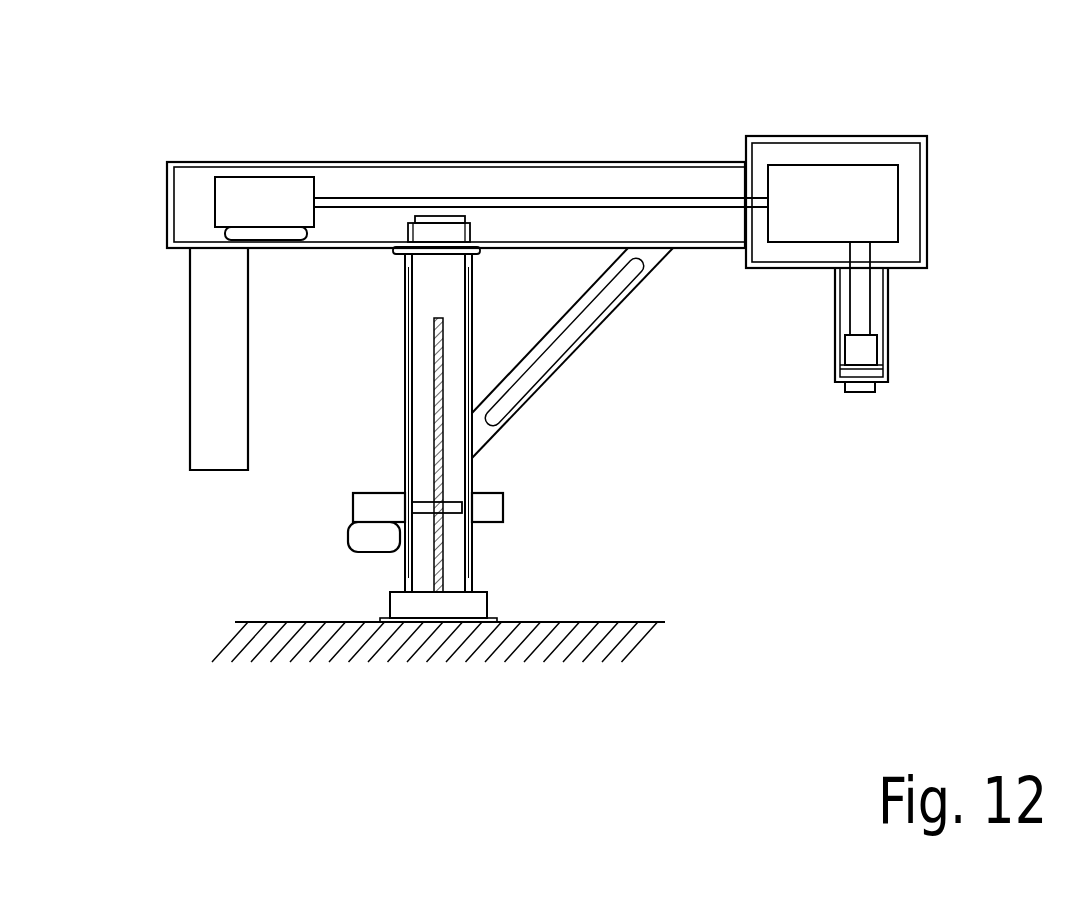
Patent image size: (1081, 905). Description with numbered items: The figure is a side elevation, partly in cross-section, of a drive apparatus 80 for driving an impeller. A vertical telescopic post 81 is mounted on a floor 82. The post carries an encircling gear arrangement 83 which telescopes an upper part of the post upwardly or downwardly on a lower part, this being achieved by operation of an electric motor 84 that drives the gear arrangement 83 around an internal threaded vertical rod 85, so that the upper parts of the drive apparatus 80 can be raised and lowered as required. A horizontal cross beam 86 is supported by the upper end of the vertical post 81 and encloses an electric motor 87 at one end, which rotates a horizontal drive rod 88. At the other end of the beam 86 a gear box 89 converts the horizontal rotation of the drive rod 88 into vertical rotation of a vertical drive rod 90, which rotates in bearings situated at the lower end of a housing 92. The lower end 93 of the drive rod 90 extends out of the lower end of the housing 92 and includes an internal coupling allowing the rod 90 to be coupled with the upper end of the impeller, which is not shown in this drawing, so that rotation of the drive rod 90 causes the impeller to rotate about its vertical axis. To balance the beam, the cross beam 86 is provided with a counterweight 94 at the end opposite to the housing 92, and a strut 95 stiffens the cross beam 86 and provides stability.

The drive apparatus 80 is at (742, 89).
The vertical telescopic post 81 is at (405, 375).
The floor 82 is at (585, 622).
The encircling gear arrangement 83 is at (492, 505).
The electric motor 84 is at (357, 540).
The internal threaded vertical rod 85 is at (440, 345).
The horizontal cross beam 86 is at (525, 157).
The electric motor 87 is at (262, 190).
The horizontal drive rod 88 is at (350, 198).
The gear box 89 is at (830, 180).
The vertical drive rod 90 is at (860, 290).
The housing 92 is at (835, 319).
The lower end of drive rod 93 is at (858, 391).
The counterweight 94 is at (215, 352).
The strut 95 is at (550, 355).